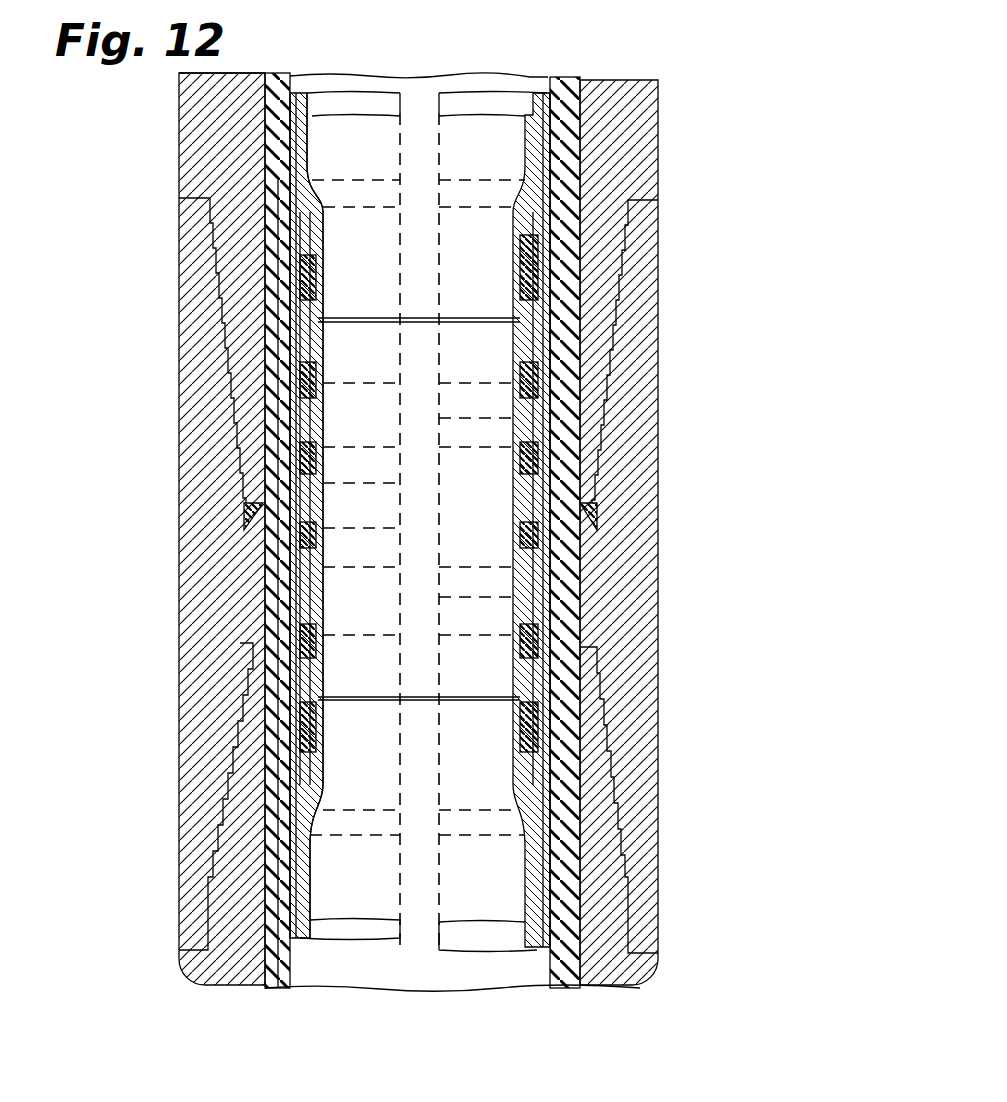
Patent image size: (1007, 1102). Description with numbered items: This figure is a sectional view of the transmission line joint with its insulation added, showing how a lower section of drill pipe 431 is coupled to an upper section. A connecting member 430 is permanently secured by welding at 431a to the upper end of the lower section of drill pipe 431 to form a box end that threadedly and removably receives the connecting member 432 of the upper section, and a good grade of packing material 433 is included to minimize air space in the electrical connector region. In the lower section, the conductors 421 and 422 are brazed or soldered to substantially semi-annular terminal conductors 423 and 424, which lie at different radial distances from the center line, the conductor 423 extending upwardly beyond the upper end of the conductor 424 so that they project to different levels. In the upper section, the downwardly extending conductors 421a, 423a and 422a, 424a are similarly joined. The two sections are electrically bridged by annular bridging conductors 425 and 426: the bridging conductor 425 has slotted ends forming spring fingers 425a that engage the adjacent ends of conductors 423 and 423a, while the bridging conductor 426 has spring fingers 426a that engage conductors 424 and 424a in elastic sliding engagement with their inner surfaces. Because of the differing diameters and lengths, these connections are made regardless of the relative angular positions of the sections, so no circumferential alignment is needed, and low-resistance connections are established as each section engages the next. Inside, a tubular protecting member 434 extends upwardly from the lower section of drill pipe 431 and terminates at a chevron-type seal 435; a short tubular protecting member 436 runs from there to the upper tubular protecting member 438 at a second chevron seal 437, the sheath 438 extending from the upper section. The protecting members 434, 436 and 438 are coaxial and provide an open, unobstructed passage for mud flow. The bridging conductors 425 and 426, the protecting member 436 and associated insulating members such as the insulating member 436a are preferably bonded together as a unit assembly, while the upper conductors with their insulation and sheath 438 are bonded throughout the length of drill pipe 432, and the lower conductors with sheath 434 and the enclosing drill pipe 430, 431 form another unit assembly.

The connecting member 430 is at (208, 599).
The lower section of drill pipe 431 is at (223, 898).
The weld 431a is at (643, 968).
The connecting member 432 is at (205, 107).
The packing material 433 is at (580, 520).
The conductor 421 is at (293, 934).
The downwardly extending conductor 421a is at (293, 140).
The conductor 422 is at (547, 941).
The downwardly extending conductor 422a is at (547, 104).
The semi-annular terminal conductor 423 is at (280, 762).
The downwardly extending conductor 423a is at (280, 250).
The semi-annular terminal conductor 424 is at (548, 799).
The downwardly extending conductor 424a is at (547, 250).
The annular bridging conductor 425 is at (280, 492).
The spring fingers 425a is at (262, 508).
The annular bridging conductor 426 is at (530, 402).
The spring fingers 426a is at (530, 428).
The tubular protecting member 434 is at (318, 797).
The chevron-type seal 435 is at (533, 703).
The short tubular protecting member 436 is at (515, 493).
The insulating member 436a is at (533, 530).
The chevron seal 437 is at (515, 321).
The upper tubular protecting member 438 is at (318, 288).